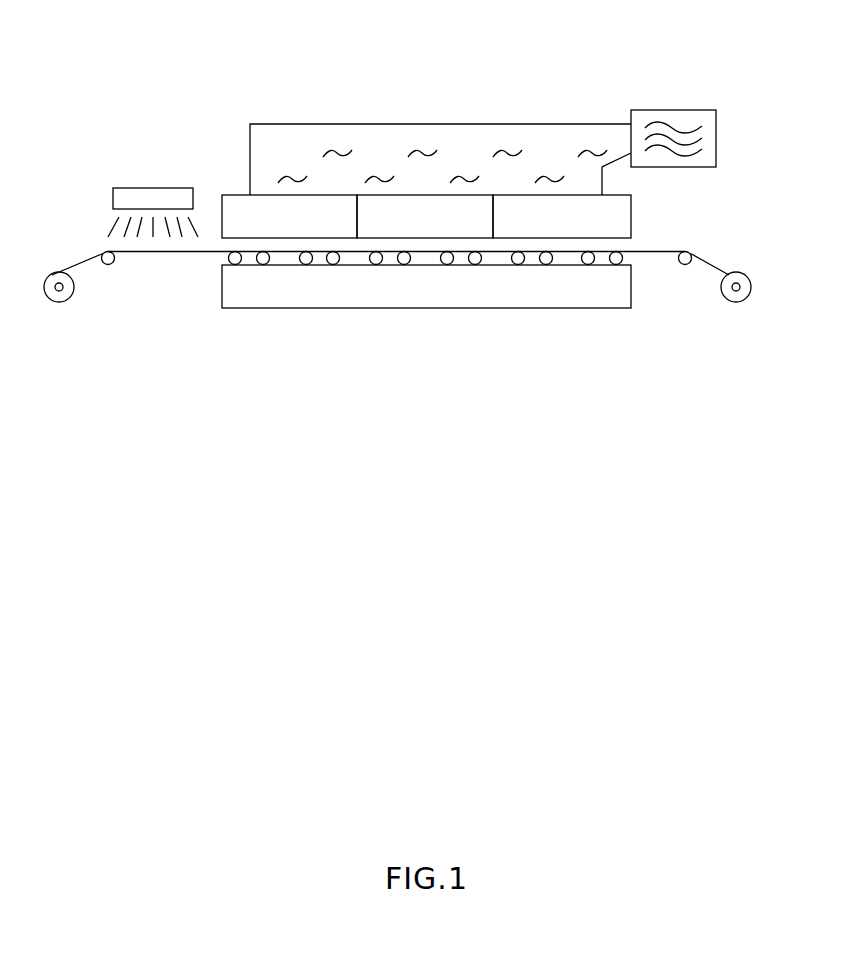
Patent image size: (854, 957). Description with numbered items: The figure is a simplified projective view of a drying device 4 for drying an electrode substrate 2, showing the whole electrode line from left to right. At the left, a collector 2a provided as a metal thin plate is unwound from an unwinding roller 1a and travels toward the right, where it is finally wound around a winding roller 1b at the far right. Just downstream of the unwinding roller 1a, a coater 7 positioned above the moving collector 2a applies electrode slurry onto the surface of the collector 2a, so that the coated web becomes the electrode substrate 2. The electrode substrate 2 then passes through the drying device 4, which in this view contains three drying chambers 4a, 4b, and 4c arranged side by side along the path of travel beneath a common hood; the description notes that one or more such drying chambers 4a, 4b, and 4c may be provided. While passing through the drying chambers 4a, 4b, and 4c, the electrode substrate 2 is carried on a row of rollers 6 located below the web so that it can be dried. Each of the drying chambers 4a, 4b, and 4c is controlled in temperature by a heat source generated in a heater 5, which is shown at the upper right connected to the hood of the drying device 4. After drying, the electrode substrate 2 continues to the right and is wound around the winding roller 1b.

The unwinding roller 1a is at (59, 302).
The winding roller 1b is at (737, 302).
The electrode substrate 2 is at (717, 260).
The collector 2a is at (80, 258).
The drying device 4 is at (426, 128).
The drying chamber 4a is at (289, 216).
The drying chamber 4b is at (425, 216).
The drying chamber 4c is at (562, 216).
The heater 5 is at (670, 110).
The rollers 6 is at (447, 264).
The coater 7 is at (152, 188).